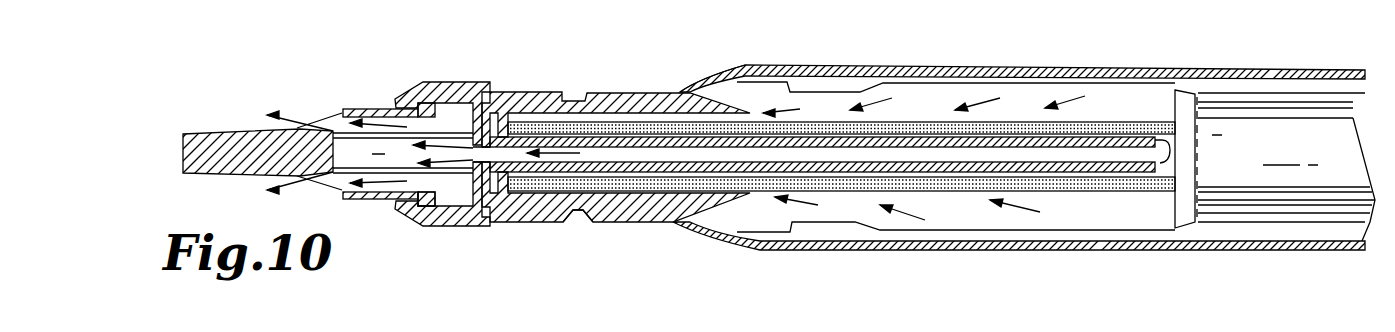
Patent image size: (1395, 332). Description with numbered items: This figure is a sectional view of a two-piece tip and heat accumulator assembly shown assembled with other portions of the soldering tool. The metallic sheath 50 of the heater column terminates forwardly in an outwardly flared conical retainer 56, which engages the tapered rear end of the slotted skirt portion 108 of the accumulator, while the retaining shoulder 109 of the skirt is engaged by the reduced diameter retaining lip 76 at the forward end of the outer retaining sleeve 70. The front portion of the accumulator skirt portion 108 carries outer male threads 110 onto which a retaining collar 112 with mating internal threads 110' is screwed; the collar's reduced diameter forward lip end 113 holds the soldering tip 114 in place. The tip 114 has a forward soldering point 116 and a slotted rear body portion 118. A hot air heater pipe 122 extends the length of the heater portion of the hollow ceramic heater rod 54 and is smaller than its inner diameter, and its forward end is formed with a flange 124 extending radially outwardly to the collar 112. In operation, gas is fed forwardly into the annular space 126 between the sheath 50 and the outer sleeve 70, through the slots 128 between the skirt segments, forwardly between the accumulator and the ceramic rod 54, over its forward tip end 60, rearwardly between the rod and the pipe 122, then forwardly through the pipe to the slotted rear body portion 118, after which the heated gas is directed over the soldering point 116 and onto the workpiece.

The forward soldering point 116 is at (240, 132).
The soldering tip 114 is at (293, 98).
The reduced diameter forward lip end 113 is at (393, 107).
The slotted rear body portion 118 is at (407, 185).
The retaining collar 112 is at (480, 82).
The flange 124 is at (470, 209).
The outer male threads 110 is at (496, 166).
The forward tip end 60 is at (523, 211).
The internal threads 110' is at (601, 240).
The hot air heater pipe 122 is at (612, 133).
The hollow ceramic heater rod 54 is at (818, 122).
The outer retaining sleeve 70 is at (878, 66).
The reduced diameter retaining lip 76 is at (695, 88).
The retaining shoulder 109 is at (737, 68).
The slotted skirt portion 108 is at (975, 78).
The slots 128 is at (1078, 78).
The conical retainer 56 is at (1195, 90).
The metallic sheath 50 is at (1286, 167).
The annular space 126 is at (1240, 228).